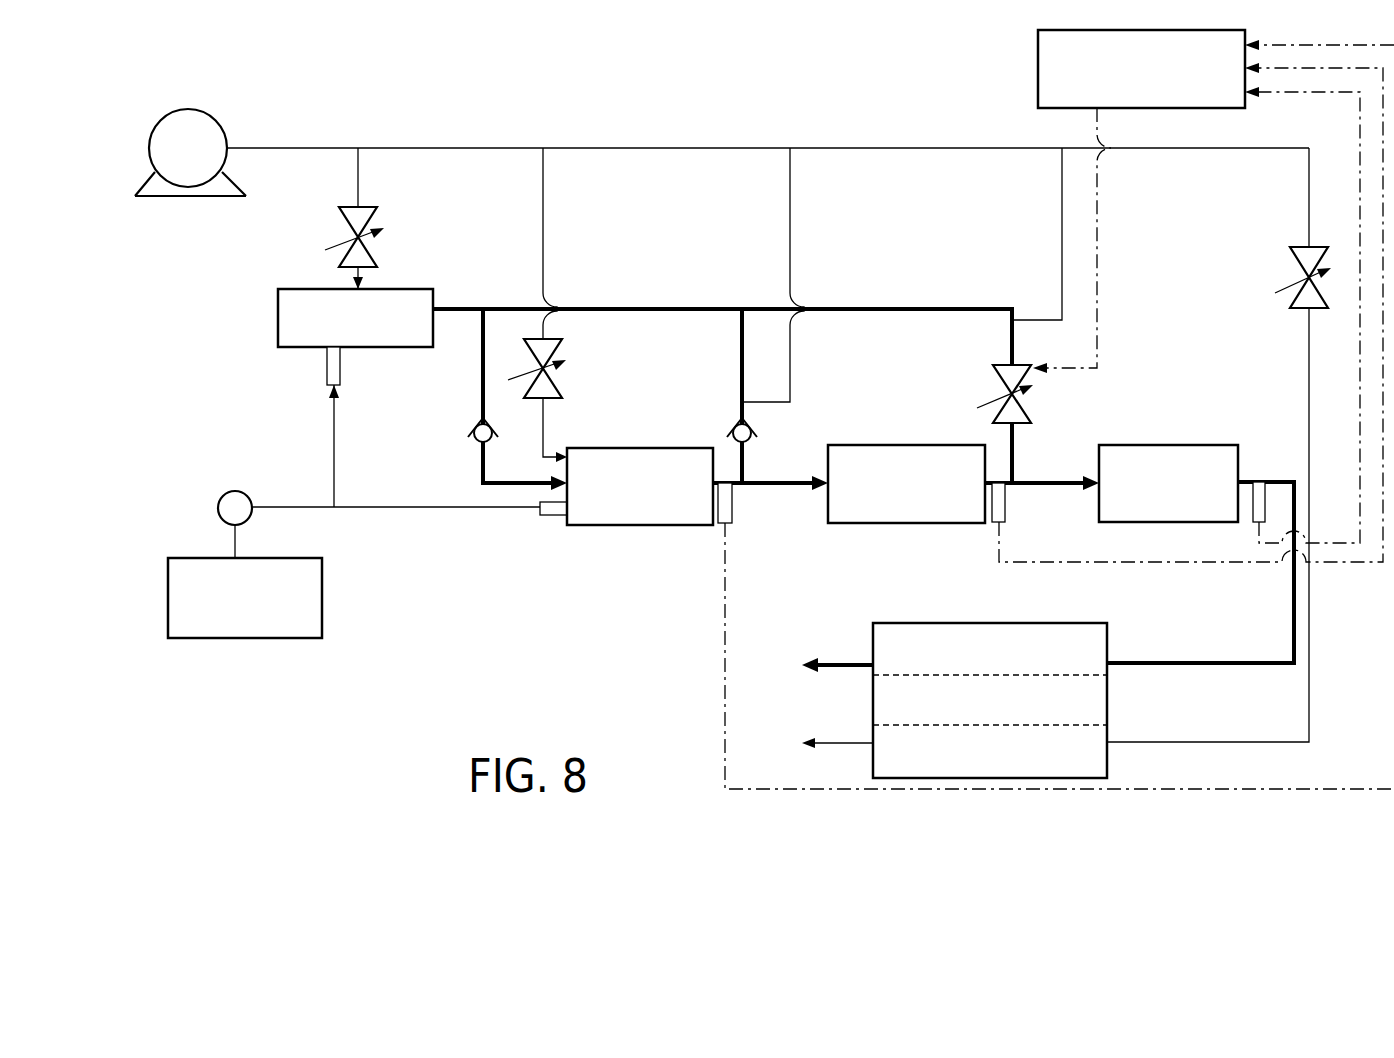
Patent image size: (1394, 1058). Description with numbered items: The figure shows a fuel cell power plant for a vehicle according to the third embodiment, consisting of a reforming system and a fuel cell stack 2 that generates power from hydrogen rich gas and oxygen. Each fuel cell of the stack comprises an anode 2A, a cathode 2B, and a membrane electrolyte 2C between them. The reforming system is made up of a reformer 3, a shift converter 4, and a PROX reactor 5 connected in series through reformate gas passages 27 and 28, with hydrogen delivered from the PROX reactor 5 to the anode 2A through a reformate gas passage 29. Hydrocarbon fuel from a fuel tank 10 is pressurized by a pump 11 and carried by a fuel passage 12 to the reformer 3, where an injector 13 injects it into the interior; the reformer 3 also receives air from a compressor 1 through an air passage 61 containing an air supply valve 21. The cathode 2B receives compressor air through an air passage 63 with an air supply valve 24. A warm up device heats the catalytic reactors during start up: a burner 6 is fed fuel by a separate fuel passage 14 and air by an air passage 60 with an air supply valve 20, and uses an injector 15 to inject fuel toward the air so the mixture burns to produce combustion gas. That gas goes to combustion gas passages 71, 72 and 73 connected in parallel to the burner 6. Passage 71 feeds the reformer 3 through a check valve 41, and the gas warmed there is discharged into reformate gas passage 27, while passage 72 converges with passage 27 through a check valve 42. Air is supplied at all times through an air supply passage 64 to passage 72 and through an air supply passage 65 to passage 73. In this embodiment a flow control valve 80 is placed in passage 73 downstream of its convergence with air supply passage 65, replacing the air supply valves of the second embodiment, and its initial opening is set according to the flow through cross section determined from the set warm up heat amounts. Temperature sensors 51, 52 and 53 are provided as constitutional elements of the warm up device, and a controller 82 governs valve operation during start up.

The compressor 1 is at (228, 130).
The fuel cell stack 2 is at (1078, 703).
The anode 2A is at (873, 648).
The cathode 2B is at (873, 768).
The membrane electrolyte 2C is at (873, 705).
The reformer 3 is at (615, 527).
The shift converter 4 is at (937, 443).
The preferential oxidation reactor 5 is at (1152, 432).
The burner 6 is at (414, 289).
The fuel tank 10 is at (322, 603).
The pump 11 is at (235, 490).
The fuel passage 12 is at (410, 507).
The injector 13 is at (560, 515).
The fuel passage 14 is at (335, 435).
The injector 15 is at (323, 370).
The air supply valve 20 is at (340, 222).
The air supply valve 21 is at (562, 383).
The air supply valve 24 is at (1290, 253).
The reformate gas passage 27 is at (775, 487).
The reformate gas passage 28 is at (1040, 487).
The reformate gas passage 29 is at (1263, 665).
The check valve 41 is at (470, 445).
The check valve 42 is at (725, 427).
The temperature sensor 51 is at (723, 525).
The temperature sensor 52 is at (997, 523).
The temperature sensor 53 is at (1257, 525).
The air passage 60 is at (358, 178).
The air passage 61 is at (543, 210).
The air passage 63 is at (1309, 187).
The air supply passage 64 is at (790, 188).
The air supply passage 65 is at (1062, 185).
The combustion gas passage 71 is at (483, 372).
The combustion gas passage 72 is at (742, 335).
The combustion gas supply passage 73 is at (1012, 345).
The flow control valve 80 is at (1030, 380).
The controller 82 is at (1038, 77).